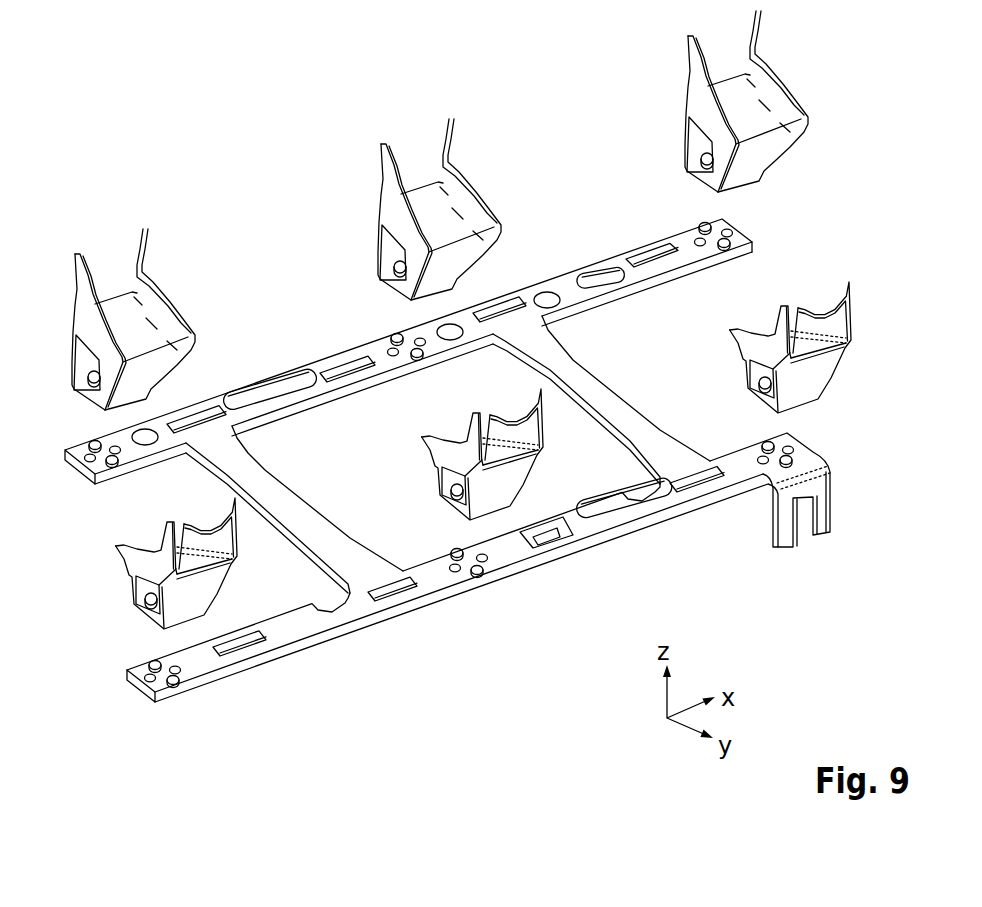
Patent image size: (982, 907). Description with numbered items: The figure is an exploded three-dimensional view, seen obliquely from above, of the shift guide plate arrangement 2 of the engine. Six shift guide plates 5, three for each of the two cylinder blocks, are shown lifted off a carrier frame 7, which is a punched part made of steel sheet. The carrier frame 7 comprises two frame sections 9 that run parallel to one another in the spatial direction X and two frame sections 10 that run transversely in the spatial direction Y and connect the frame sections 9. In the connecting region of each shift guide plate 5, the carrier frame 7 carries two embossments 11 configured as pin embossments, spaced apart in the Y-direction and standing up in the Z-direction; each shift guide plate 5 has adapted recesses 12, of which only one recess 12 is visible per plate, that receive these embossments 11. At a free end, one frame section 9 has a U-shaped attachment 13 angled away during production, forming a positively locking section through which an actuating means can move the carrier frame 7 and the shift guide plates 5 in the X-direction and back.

The supporting structure assembly 2 is at (245, 131).
The shift guide plate 5 is at (193, 292).
The carrier frame 7 is at (571, 240).
The frame section 9 is at (308, 368).
The frame section 10 is at (300, 512).
The embossment 11 is at (86, 460).
The recess 12 is at (86, 377).
The attachment 13 is at (855, 506).